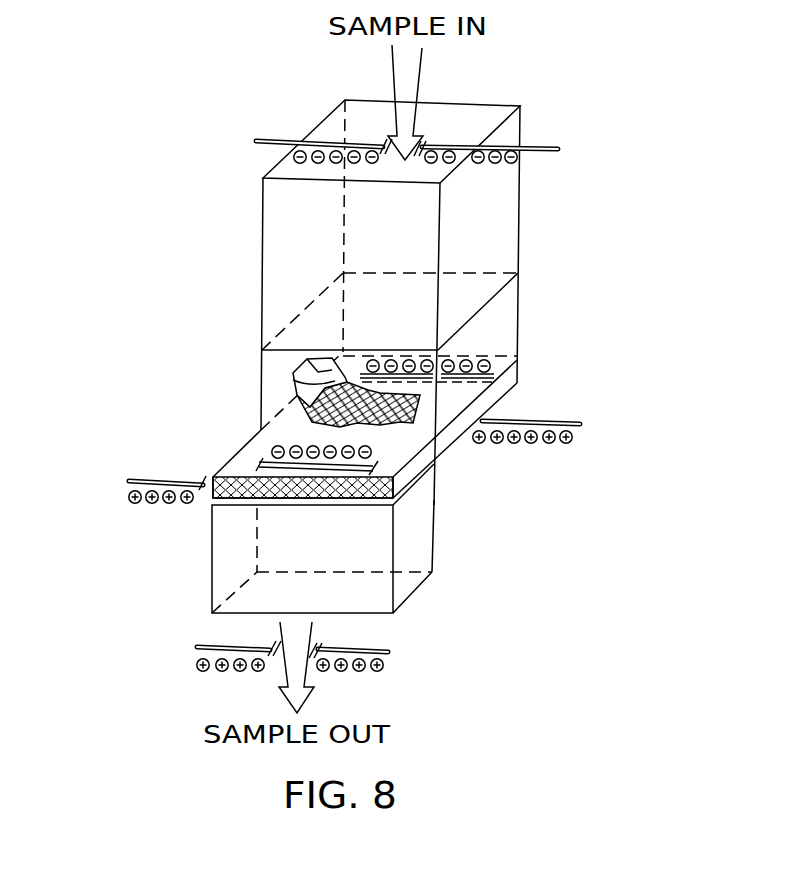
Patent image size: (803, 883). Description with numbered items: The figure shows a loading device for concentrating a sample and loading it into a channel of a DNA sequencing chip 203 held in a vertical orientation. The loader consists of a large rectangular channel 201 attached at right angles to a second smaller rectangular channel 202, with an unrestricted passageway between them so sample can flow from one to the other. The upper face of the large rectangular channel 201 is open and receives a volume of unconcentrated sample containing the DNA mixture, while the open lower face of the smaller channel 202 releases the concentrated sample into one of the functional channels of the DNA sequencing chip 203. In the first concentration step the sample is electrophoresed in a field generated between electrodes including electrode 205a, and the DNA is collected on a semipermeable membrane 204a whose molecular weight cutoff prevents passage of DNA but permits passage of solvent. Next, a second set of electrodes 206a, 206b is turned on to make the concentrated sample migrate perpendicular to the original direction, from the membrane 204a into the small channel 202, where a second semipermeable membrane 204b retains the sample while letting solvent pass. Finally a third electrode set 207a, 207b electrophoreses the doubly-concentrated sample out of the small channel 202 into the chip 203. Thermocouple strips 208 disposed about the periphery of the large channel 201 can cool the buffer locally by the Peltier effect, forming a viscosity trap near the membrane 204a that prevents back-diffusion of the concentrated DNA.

The large rectangular channel 201 is at (483, 103).
The second smaller rectangular channel 202 is at (247, 453).
The DNA sequencing chip 203 is at (415, 592).
The semipermeable membrane 204a is at (333, 387).
The second semipermeable membrane 204b is at (397, 506).
The electrode 205a is at (558, 148).
The electrode 206a is at (517, 360).
The electrode 206b is at (148, 477).
The electrode 207a is at (378, 456).
The electrode 207b is at (390, 655).
The thermocouple strips 208 is at (518, 273).